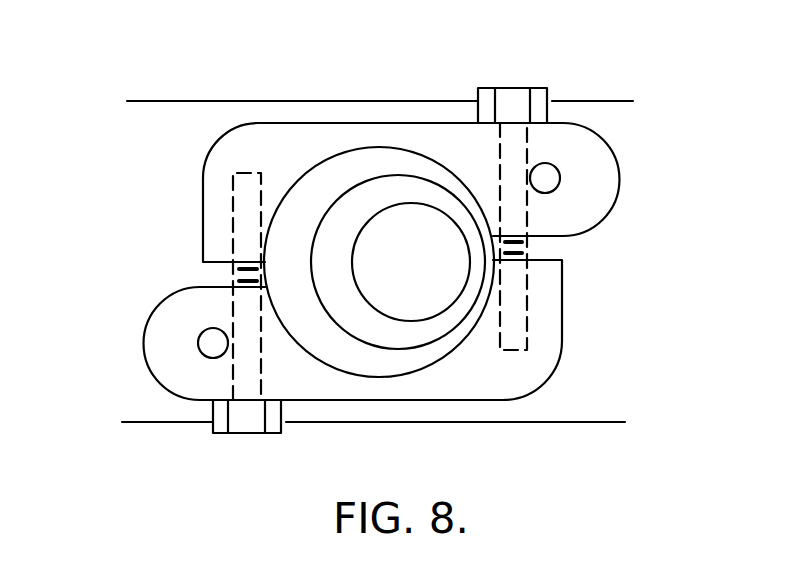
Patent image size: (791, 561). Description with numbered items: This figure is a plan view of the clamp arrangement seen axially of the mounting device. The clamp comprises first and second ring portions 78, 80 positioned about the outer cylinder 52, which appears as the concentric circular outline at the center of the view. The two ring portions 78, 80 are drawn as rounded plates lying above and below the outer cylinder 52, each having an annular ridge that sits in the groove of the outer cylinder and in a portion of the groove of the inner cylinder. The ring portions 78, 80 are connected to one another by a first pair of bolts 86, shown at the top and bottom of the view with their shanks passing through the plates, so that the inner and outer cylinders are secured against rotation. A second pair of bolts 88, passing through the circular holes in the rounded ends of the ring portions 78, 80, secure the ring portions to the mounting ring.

The outer cylinder 52 is at (342, 172).
The first ring portion 78 is at (578, 135).
The second ring portion 80 is at (553, 335).
The first pair of bolts 86 is at (506, 88).
The second pair of bolts 88 is at (559, 174).